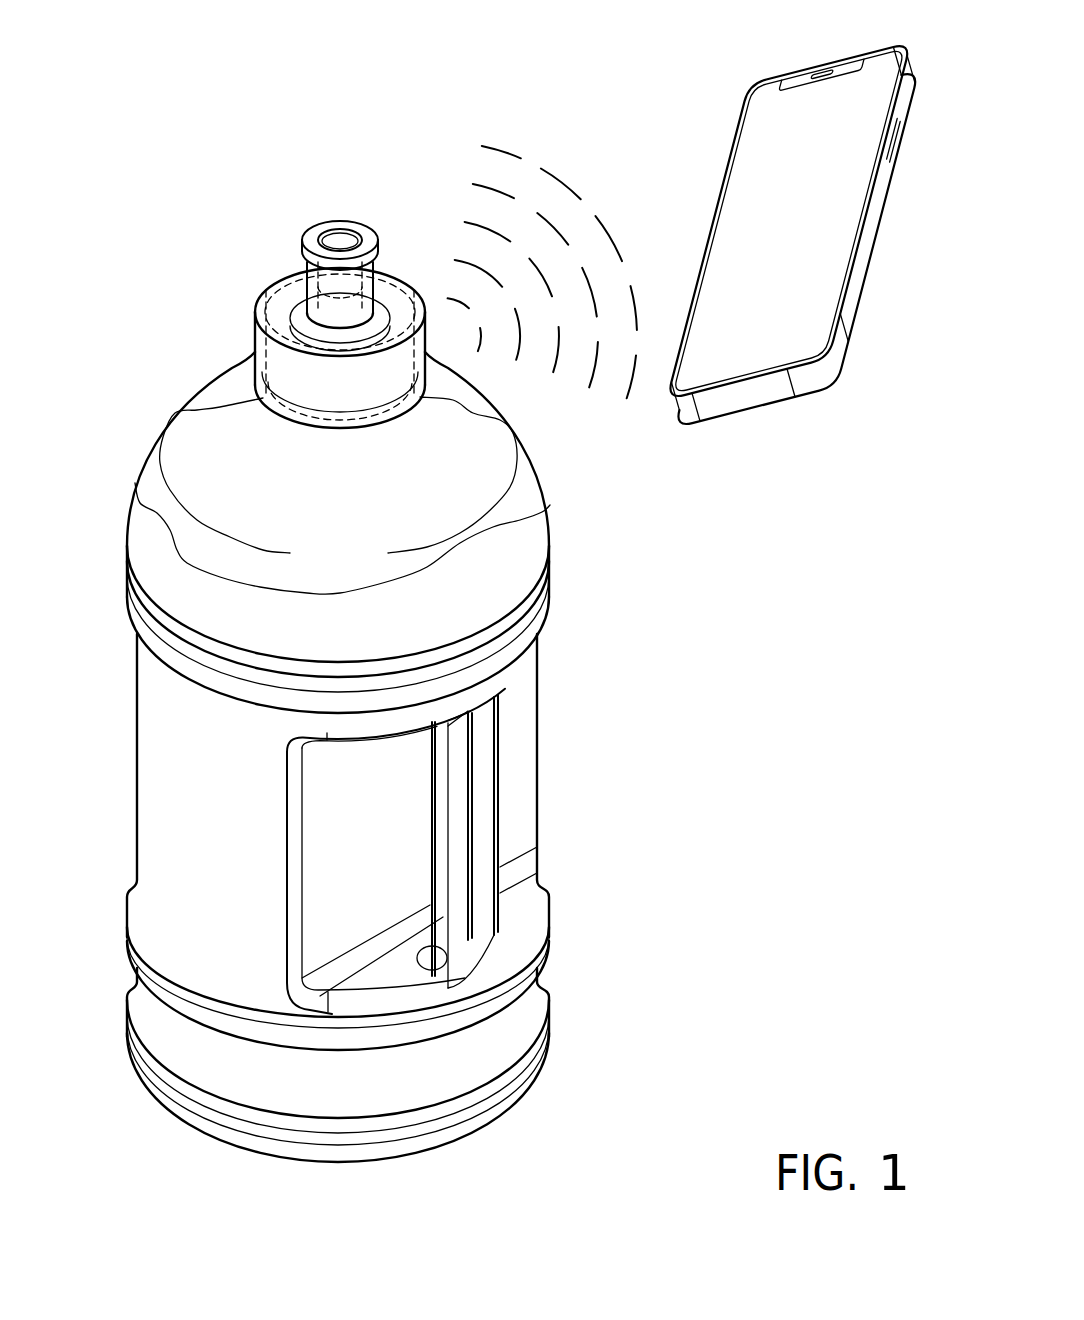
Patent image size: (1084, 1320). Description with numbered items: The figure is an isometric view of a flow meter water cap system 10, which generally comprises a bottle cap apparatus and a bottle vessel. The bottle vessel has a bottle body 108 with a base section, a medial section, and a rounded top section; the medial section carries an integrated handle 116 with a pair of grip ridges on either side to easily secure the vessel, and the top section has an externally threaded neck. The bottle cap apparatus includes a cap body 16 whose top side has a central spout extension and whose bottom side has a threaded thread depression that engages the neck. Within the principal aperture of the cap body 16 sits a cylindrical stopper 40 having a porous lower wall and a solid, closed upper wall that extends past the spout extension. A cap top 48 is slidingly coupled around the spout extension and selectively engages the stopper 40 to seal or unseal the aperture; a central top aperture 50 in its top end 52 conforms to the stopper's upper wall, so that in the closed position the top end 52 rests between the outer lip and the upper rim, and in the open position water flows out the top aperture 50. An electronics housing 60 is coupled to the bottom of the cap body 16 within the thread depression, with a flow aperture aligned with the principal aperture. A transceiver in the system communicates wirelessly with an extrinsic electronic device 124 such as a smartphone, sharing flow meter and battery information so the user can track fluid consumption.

The flow meter water cap system 10 is at (109, 250).
The cap body 16 is at (268, 298).
The cylindrical stopper 40 is at (343, 318).
The cap top 48 is at (374, 265).
The central top aperture 50 is at (337, 250).
The top end 52 is at (306, 233).
The electronics housing 60 is at (384, 373).
The bottle body 108 is at (512, 540).
The integrated handle 116 is at (482, 777).
The extrinsic electronic device 124 is at (850, 283).